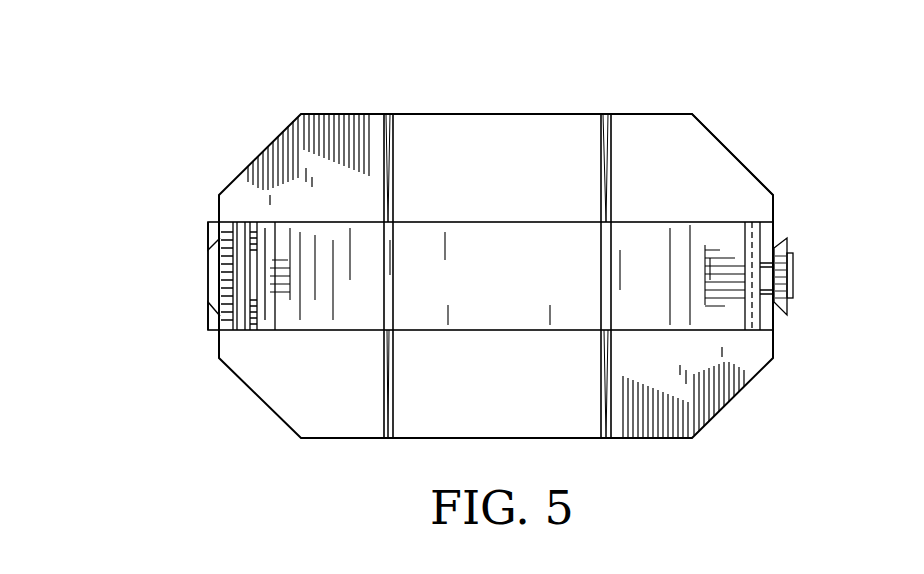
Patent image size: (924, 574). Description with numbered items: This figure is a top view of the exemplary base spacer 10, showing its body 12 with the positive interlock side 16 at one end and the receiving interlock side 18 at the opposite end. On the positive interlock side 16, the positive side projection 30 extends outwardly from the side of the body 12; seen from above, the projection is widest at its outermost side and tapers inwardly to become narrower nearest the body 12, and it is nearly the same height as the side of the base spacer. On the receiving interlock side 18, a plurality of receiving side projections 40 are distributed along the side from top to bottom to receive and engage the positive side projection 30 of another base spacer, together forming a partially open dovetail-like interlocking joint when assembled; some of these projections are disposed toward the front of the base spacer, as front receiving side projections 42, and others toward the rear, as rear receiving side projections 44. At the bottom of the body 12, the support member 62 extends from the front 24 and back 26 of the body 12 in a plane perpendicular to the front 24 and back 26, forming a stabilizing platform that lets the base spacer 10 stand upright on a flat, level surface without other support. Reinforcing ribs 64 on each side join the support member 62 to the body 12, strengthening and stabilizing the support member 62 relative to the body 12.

The base spacer 10 is at (342, 76).
The body 12 is at (510, 230).
The positive interlock side 16 is at (797, 227).
The receiving interlock side 18 is at (201, 333).
The front 24 is at (597, 452).
The back 26 is at (489, 102).
The positive side projection 30 is at (789, 272).
The receiving side projections 40 is at (161, 158).
The front receiving side projections 42 is at (208, 316).
The rear receiving side projections 44 is at (208, 239).
The support member 62 is at (655, 116).
The reinforcing ribs 64 is at (393, 162).